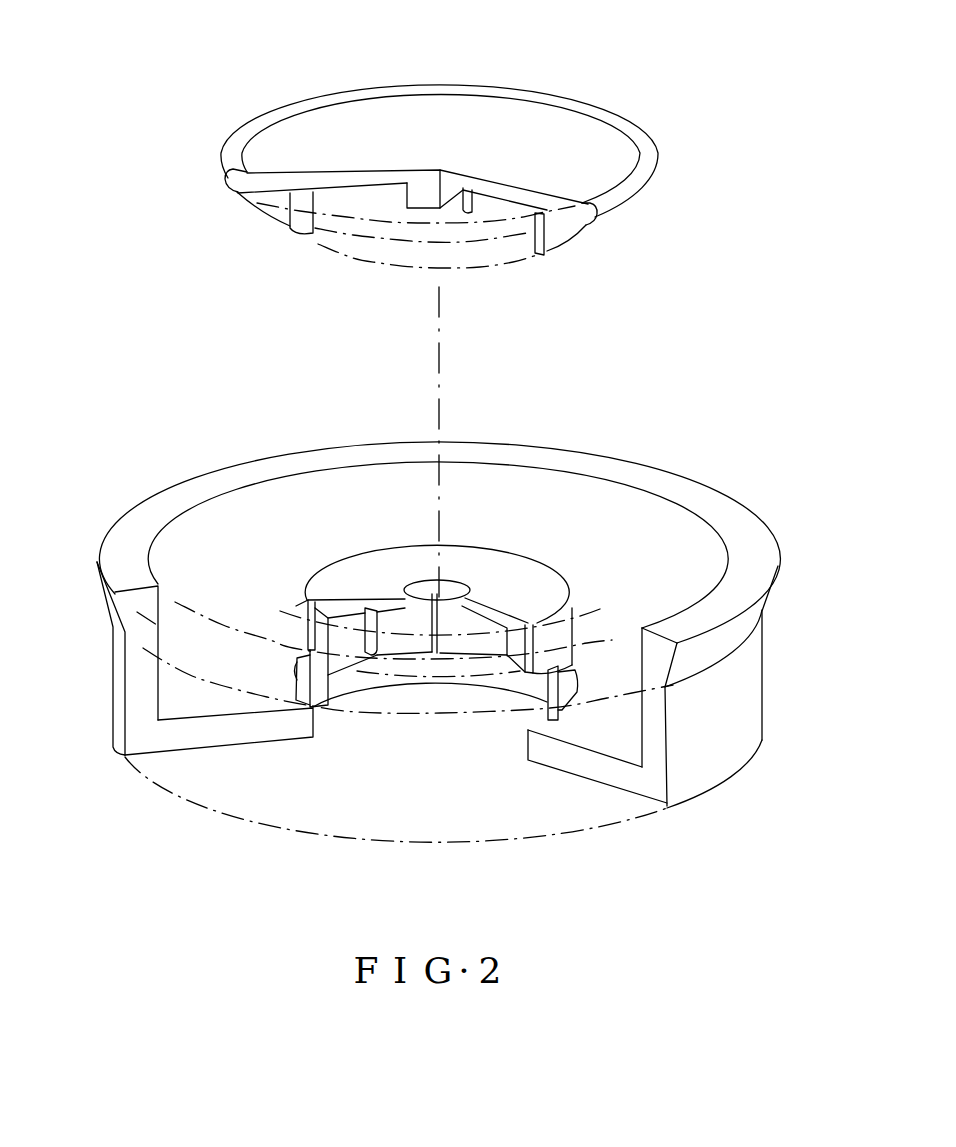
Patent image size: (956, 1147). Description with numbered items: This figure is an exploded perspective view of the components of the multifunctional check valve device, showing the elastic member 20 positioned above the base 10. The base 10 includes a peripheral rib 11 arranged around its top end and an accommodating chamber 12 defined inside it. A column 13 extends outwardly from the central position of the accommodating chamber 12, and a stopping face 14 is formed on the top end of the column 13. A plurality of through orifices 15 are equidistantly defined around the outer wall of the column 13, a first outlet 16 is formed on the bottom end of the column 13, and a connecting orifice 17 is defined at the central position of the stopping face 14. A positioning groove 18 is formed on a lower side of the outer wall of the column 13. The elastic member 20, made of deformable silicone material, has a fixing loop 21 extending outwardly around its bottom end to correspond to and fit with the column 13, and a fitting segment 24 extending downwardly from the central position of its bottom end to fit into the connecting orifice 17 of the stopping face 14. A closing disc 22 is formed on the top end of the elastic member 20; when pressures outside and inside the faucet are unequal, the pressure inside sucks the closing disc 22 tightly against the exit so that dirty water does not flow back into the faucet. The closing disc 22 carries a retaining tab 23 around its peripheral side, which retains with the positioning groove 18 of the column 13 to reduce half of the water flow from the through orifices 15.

The base 10 is at (409, 671).
The peripheral rib 11 is at (160, 503).
The accommodating chamber 12 is at (195, 703).
The column 13 is at (478, 636).
The stopping face 14 is at (400, 567).
The through orifices 15 is at (338, 660).
The first outlet 16 is at (434, 751).
The connecting orifice 17 is at (450, 590).
The positioning groove 18 is at (563, 685).
The elastic member 20 is at (420, 160).
The fixing loop 21 is at (298, 213).
The closing disc 22 is at (560, 120).
The retaining tab 23 is at (242, 131).
The fitting segment 24 is at (457, 197).